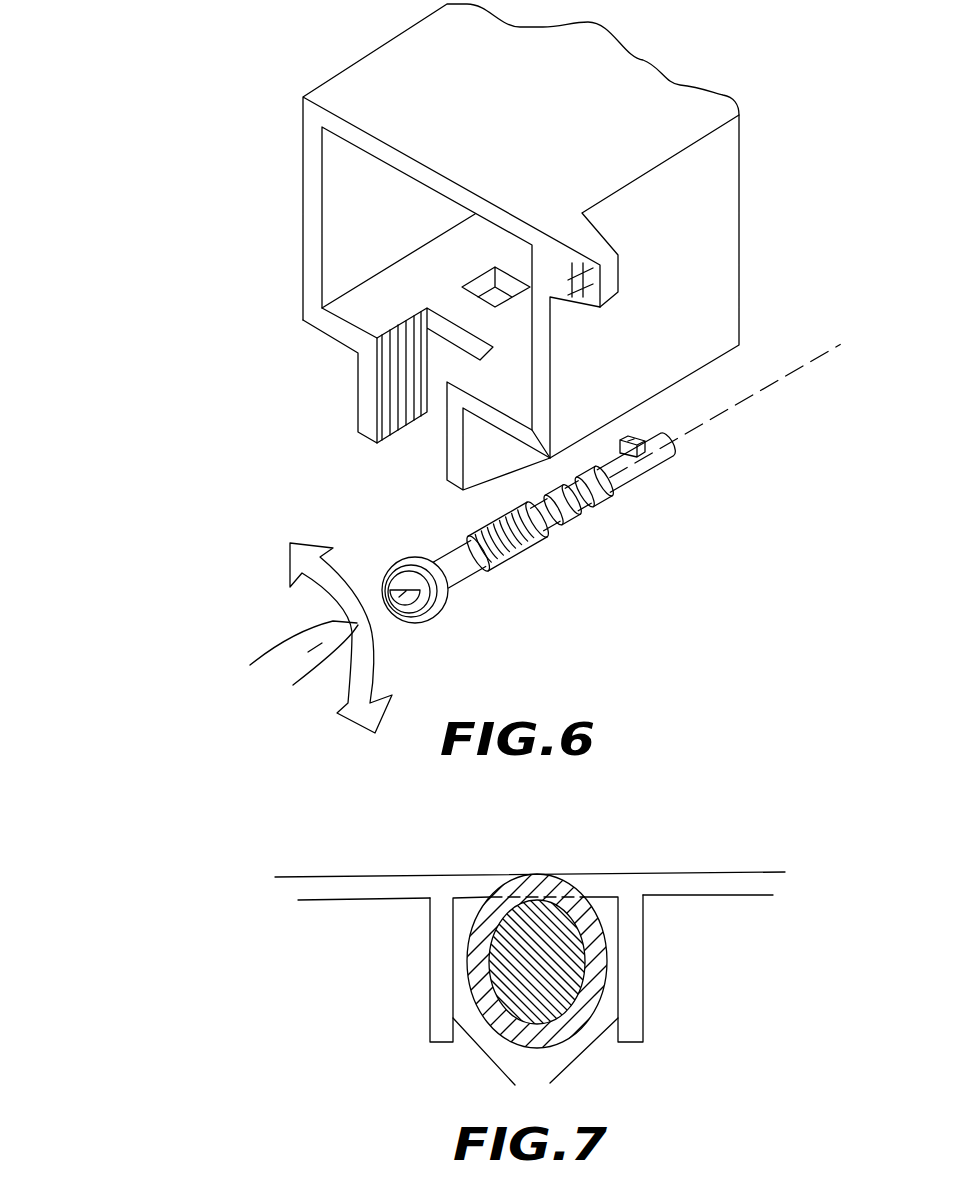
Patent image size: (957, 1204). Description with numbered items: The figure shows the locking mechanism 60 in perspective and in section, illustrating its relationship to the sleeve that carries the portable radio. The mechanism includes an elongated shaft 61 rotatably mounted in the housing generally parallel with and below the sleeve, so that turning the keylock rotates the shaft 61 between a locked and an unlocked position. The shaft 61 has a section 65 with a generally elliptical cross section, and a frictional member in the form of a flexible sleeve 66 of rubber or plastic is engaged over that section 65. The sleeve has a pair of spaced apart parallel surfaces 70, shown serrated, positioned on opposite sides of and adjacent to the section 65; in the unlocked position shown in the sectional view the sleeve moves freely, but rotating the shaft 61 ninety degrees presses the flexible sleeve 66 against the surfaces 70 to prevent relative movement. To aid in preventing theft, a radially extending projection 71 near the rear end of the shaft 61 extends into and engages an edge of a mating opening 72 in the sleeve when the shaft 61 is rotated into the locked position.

In FIG. 6, the locking mechanism 60 is at (692, 572).
In FIG. 6, the elongated shaft 61 is at (635, 475).
In FIG. 7, the section 65 is at (518, 937).
In FIG. 6, the flexible sleeve 66 is at (503, 567).
In FIG. 7, the flexible sleeve 66 is at (557, 890).
In FIG. 6, the spaced apart parallel surfaces 70 is at (415, 338).
In FIG. 7, the spaced apart parallel surfaces 70 is at (536, 1000).
In FIG. 6, the radially extending projection 71 is at (630, 438).
In FIG. 6, the mating opening 72 is at (494, 285).